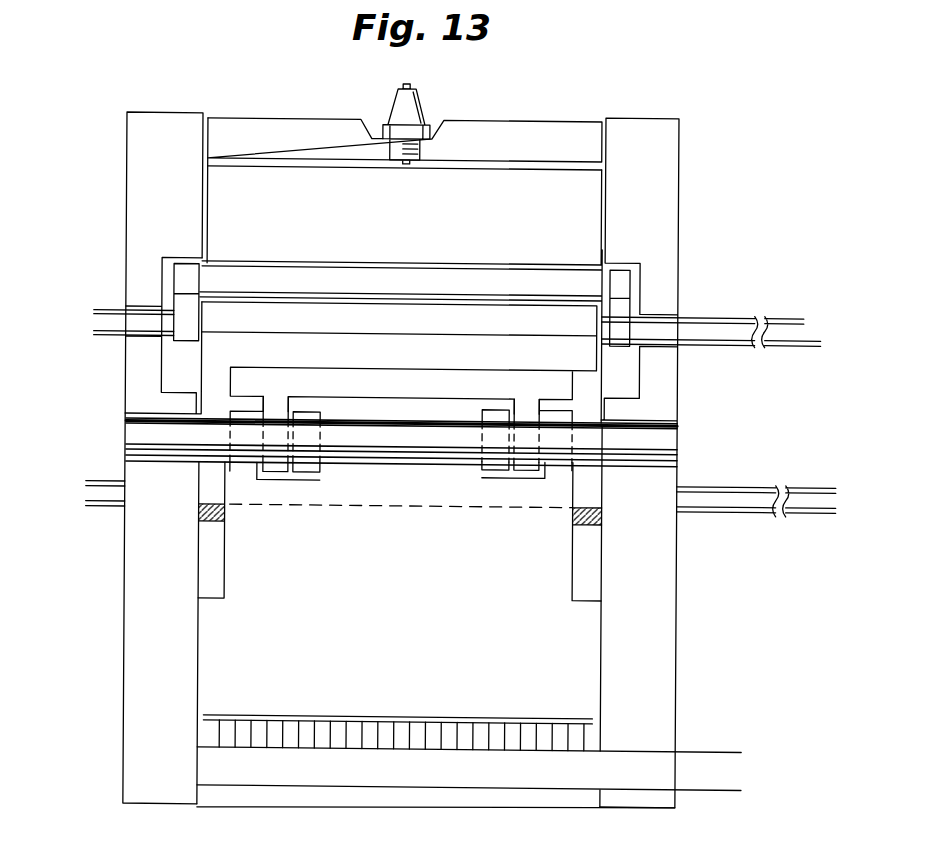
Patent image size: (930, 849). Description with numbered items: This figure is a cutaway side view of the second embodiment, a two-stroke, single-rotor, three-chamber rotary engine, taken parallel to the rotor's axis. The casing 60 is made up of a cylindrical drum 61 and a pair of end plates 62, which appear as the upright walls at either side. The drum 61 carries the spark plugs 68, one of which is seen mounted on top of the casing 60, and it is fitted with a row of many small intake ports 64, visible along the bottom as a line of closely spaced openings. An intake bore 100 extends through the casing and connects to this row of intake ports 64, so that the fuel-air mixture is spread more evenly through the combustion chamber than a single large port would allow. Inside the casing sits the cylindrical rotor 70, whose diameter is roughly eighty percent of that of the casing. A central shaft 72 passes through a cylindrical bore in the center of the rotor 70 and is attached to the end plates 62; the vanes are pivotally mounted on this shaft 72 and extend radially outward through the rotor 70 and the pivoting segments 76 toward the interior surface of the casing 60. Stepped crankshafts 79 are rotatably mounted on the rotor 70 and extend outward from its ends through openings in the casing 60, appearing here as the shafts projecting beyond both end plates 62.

The casing 60 is at (553, 117).
The cylindrical drum 61 is at (466, 135).
The end plates 62 is at (679, 226).
The intake ports 64 is at (232, 740).
The spark plugs 68 is at (402, 112).
The rotor 70 is at (428, 231).
The central shaft 72 is at (679, 431).
The pivoting segments 76 is at (200, 508).
The stepped crankshafts 79 is at (100, 320).
The intake bore 100 is at (702, 778).